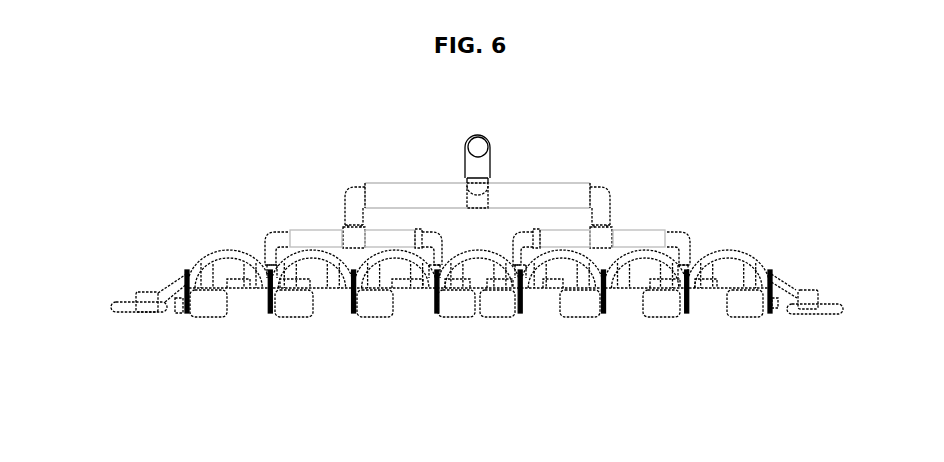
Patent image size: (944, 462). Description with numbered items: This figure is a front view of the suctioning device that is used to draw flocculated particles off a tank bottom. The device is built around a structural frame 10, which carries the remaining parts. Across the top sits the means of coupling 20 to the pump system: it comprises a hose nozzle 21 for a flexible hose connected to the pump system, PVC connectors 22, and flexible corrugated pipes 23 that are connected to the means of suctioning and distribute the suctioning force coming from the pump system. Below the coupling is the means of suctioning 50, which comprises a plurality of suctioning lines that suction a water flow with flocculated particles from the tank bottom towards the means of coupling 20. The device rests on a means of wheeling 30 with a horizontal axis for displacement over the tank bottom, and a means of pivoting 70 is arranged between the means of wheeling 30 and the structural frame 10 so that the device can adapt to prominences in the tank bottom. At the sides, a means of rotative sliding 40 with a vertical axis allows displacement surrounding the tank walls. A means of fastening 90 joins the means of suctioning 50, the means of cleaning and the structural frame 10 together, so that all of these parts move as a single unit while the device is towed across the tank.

The structural frame 10 is at (178, 273).
The means of coupling 20 is at (470, 140).
The hose nozzle 21 is at (489, 143).
The PVC connectors 22 is at (605, 233).
The flexible corrugated pipes 23 is at (315, 237).
The means of wheeling 30 is at (233, 317).
The means of rotative sliding 40 is at (127, 295).
The means of suctioning 50 is at (655, 285).
The means of pivoting 70 is at (768, 273).
The means of fastening 90 is at (427, 270).